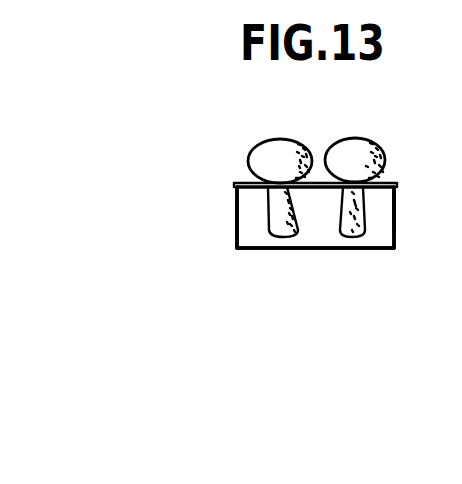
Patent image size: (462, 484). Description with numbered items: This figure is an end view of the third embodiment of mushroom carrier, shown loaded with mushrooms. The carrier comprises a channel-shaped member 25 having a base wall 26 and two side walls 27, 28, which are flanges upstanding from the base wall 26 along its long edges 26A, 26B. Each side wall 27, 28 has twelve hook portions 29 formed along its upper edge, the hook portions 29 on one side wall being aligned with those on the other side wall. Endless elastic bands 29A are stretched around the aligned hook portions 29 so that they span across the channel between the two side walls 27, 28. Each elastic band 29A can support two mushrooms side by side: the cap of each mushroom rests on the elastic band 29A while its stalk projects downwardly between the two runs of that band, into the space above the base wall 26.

The channel-shaped member 25 is at (240, 252).
The base wall 26 is at (322, 249).
The long edge 26A is at (236, 243).
The long edge 26B is at (393, 249).
The side wall 27 is at (235, 213).
The side wall 28 is at (394, 222).
The hook portion 29 is at (237, 183).
The endless elastic band 29A is at (318, 182).